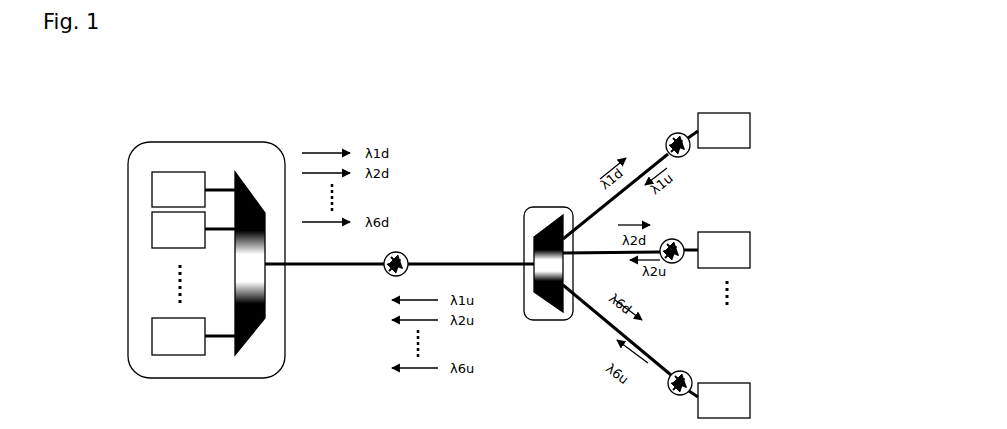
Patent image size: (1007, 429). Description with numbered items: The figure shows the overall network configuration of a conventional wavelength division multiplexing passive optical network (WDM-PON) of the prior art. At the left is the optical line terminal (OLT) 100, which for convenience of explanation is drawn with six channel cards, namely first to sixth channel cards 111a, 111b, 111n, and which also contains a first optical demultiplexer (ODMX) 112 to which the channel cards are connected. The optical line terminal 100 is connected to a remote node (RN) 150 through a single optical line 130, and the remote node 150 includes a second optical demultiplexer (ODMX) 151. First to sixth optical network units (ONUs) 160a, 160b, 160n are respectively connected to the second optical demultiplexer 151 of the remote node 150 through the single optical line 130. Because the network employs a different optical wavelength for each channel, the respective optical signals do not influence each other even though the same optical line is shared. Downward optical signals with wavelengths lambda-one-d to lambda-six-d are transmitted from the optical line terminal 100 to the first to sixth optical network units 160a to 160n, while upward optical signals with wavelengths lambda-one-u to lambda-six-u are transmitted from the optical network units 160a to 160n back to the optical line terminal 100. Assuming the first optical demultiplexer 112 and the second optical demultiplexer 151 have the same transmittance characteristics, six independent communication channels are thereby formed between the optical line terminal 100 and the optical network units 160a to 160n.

The optical line terminal 100 is at (213, 142).
The first channel card 111a is at (152, 183).
The second channel card 111b is at (152, 227).
The sixth channel card 111n is at (152, 331).
The first optical demultiplexer 112 is at (252, 190).
The single optical line 130 is at (384, 273).
The remote node 150 is at (547, 207).
The second optical demultiplexer 151 is at (540, 300).
The first optical network unit 160a is at (734, 113).
The second optical network unit 160b is at (734, 232).
The sixth optical network unit 160n is at (737, 383).